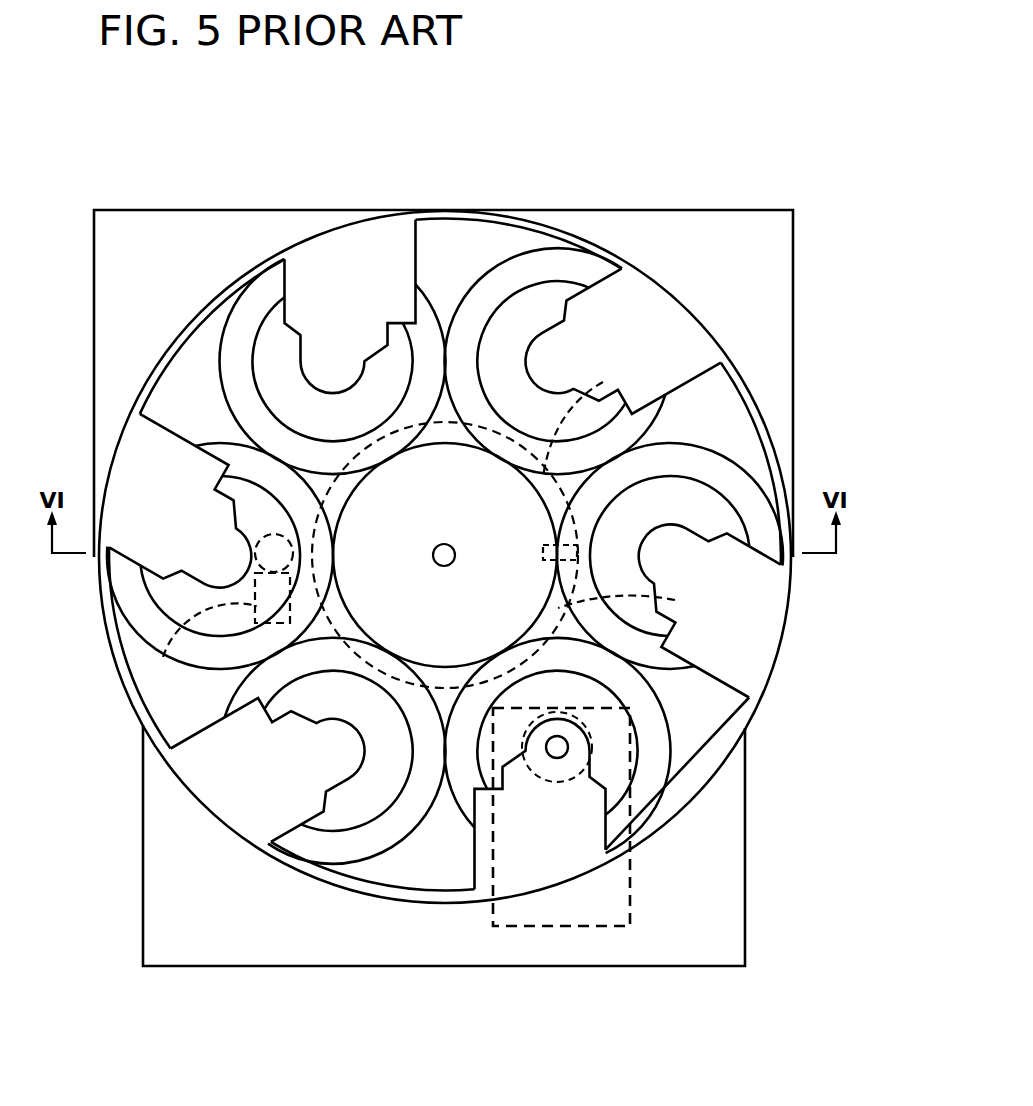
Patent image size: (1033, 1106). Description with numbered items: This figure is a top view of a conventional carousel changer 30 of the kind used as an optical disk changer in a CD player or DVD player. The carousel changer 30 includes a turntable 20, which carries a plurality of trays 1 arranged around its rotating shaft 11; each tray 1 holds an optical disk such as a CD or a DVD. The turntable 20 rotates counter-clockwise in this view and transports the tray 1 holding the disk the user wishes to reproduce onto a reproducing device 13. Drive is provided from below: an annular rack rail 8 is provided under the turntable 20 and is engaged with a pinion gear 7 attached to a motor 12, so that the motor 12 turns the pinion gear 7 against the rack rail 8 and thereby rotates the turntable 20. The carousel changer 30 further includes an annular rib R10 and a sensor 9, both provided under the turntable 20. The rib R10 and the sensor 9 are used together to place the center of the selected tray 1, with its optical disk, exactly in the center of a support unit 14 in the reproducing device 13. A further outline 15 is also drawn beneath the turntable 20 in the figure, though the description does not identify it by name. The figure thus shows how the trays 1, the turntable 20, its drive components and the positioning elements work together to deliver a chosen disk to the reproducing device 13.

The tray 1 is at (353, 335).
The pinion gear 7 is at (268, 533).
The rack rail 8 is at (603, 382).
The sensor 9 is at (675, 600).
The rotating shaft 11 is at (456, 556).
The motor 12 is at (163, 657).
The reproducing device 13 is at (596, 930).
The support unit 14 is at (570, 746).
The base plate 15 is at (737, 886).
The turntable 20 is at (538, 243).
The carousel changer 30 is at (475, 109).
The annular rib R10 is at (152, 466).